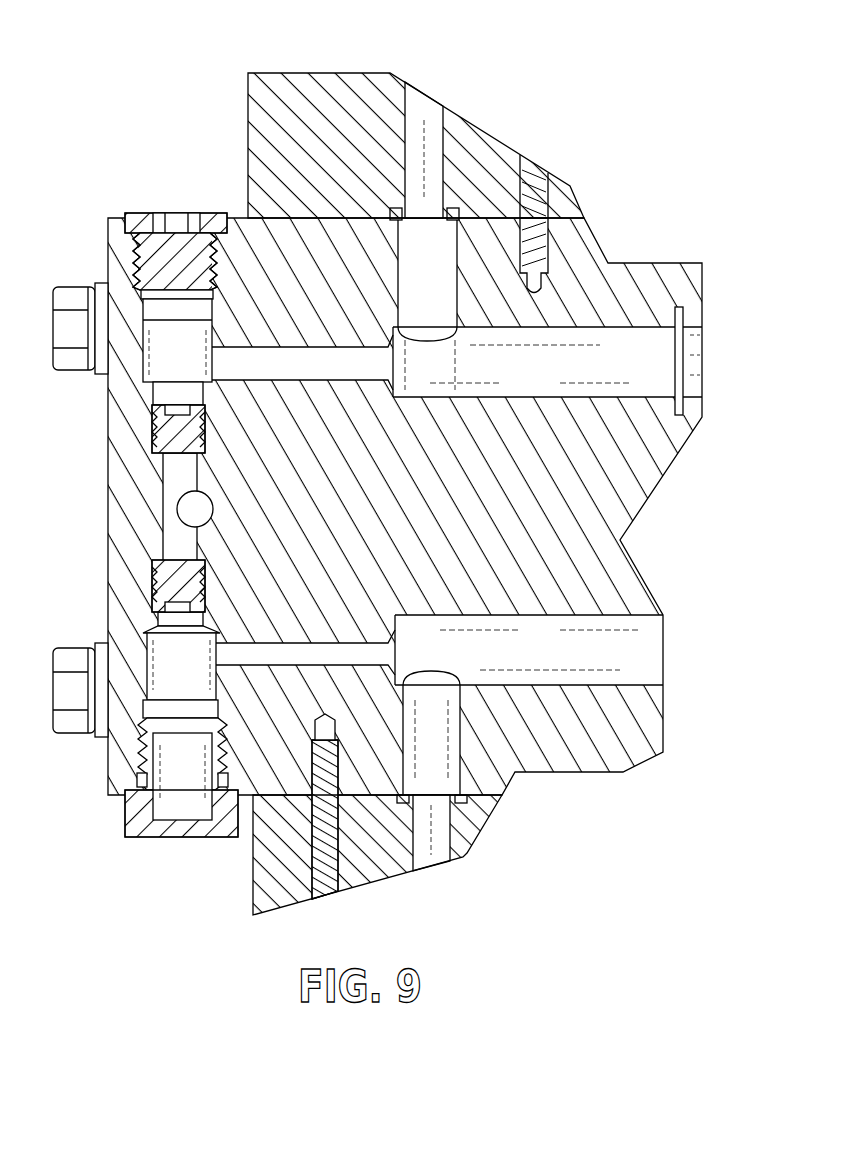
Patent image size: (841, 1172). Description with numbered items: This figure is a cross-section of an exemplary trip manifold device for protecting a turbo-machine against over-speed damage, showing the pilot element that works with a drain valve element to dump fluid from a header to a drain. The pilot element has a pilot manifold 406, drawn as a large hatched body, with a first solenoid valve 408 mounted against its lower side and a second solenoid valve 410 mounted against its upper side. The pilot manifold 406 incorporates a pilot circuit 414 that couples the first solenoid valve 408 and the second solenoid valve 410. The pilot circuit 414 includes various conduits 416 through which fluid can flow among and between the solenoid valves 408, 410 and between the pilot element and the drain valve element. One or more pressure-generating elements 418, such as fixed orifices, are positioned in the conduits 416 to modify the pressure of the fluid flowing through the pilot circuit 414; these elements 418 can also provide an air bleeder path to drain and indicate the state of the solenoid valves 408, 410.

The pilot manifold 406 is at (377, 522).
The first solenoid valve 408 is at (370, 865).
The second solenoid valve 410 is at (318, 102).
The pilot circuit 414 is at (322, 362).
The conduits 416 is at (633, 350).
The pressure-generating elements 418 is at (152, 572).